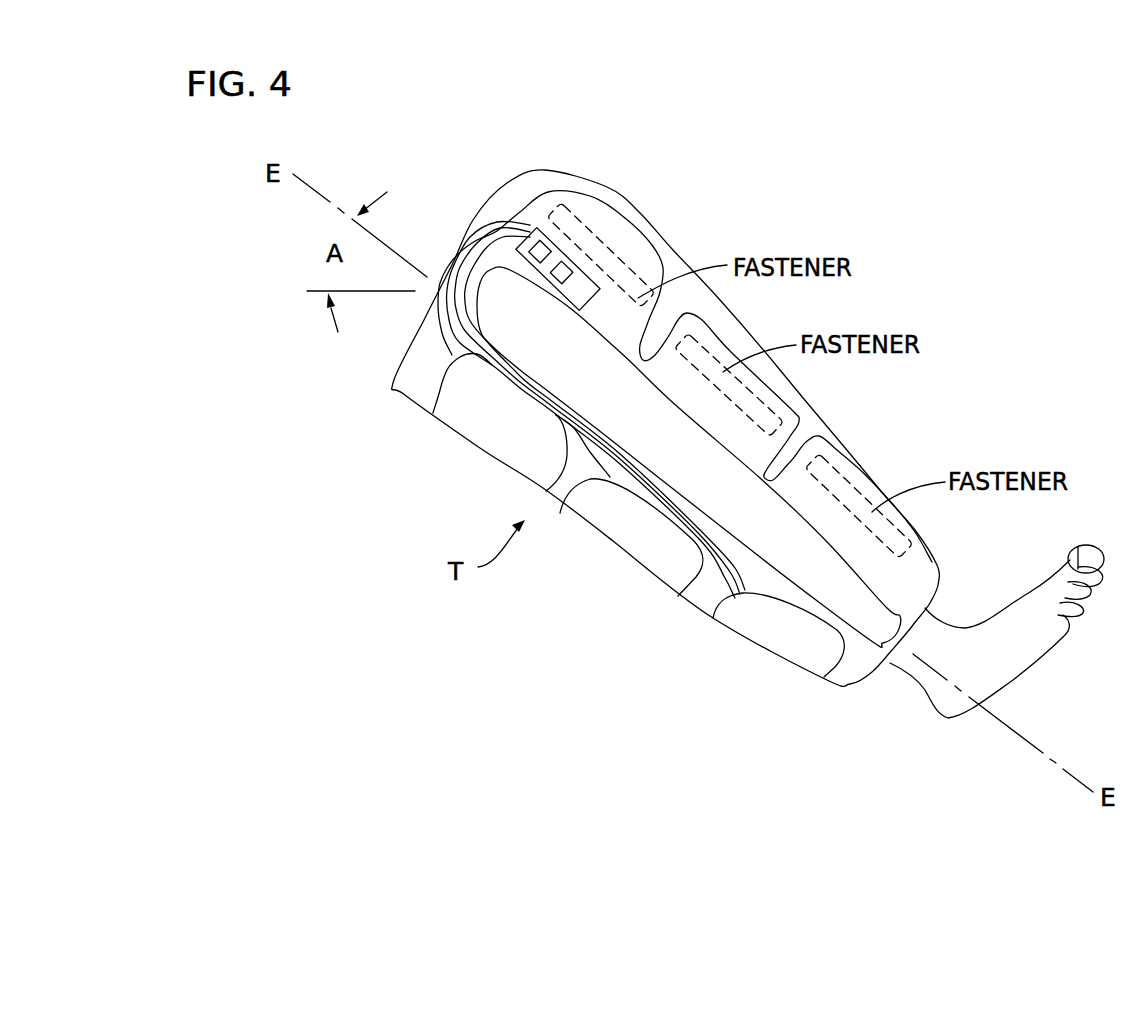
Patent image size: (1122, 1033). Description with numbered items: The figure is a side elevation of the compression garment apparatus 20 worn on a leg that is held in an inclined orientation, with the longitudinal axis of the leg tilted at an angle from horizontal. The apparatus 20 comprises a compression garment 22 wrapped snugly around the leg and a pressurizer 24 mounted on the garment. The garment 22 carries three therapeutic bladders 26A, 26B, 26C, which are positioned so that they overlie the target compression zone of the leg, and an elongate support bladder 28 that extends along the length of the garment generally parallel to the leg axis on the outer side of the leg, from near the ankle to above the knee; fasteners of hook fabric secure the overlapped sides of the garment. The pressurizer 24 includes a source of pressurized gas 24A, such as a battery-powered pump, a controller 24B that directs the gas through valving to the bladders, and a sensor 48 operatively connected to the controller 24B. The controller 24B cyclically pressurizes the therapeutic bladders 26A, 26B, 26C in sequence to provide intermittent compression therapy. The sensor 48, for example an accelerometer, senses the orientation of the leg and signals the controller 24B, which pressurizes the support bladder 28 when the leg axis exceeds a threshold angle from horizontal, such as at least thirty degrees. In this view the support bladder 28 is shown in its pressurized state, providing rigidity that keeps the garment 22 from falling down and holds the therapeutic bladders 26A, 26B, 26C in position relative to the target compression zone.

The compression garment apparatus 20 is at (963, 213).
The compression garment 22 is at (395, 389).
The pressurizer 24 is at (530, 226).
The source of pressurized gas 24A is at (630, 292).
The controller 24B is at (568, 272).
The therapeutic bladder 26A is at (774, 633).
The therapeutic bladder 26B is at (613, 527).
The therapeutic bladder 26C is at (491, 431).
The support bladder 28 is at (797, 545).
The sensor 48 is at (557, 258).